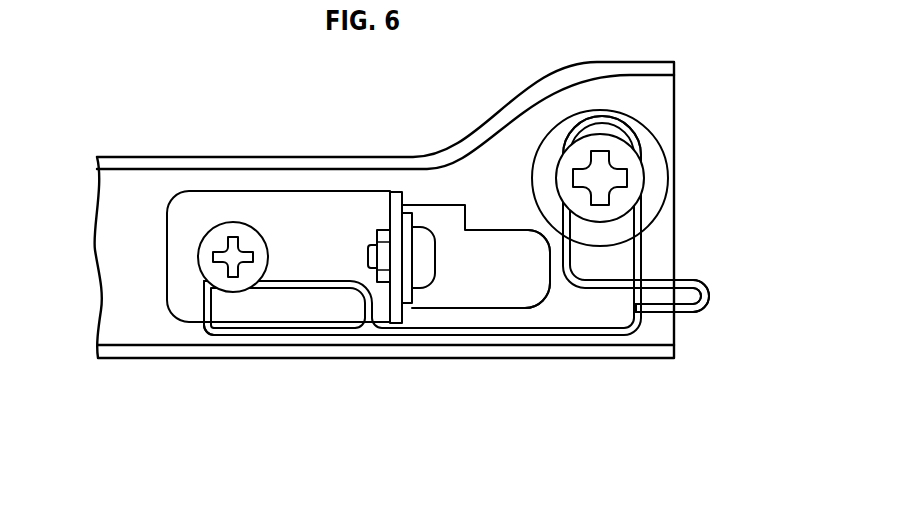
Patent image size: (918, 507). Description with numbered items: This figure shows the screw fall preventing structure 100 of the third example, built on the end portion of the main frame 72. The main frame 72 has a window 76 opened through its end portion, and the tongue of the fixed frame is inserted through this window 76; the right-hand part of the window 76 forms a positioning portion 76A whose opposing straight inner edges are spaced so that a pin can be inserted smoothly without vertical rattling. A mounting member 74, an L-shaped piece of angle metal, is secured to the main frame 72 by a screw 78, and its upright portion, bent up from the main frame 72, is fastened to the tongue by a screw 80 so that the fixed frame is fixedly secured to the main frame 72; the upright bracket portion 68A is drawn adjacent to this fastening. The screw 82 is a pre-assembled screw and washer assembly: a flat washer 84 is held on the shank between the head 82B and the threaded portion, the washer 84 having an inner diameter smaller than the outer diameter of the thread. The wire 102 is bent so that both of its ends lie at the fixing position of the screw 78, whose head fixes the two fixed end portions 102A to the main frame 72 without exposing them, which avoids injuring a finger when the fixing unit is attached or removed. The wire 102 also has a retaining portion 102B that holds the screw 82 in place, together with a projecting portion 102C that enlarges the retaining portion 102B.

The main frame 72 is at (128, 157).
The mounting member 74 is at (293, 212).
The window 76 is at (453, 262).
The positioning portion 76A is at (502, 268).
The screw 78 is at (236, 222).
The screw 80 is at (438, 228).
The screw 82 is at (663, 163).
The head 82B is at (638, 185).
The washer 84 is at (653, 158).
The bracket portion 68A is at (405, 198).
The screw fall preventing structure 100 is at (414, 261).
The wire 102 is at (334, 281).
The fixed end portions 102A is at (250, 294).
The retaining portion 102B is at (567, 128).
The projecting portion 102C is at (662, 276).